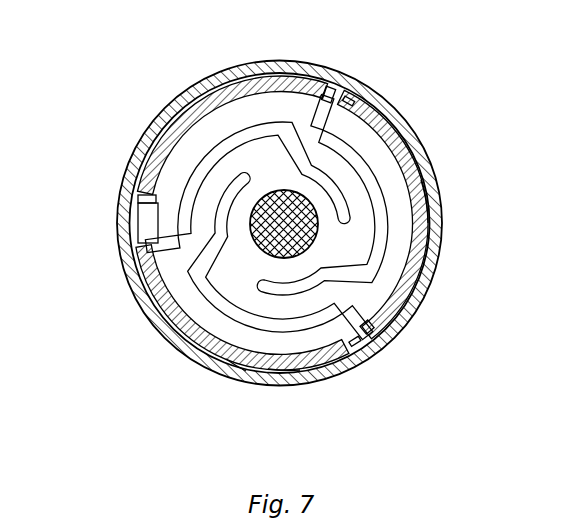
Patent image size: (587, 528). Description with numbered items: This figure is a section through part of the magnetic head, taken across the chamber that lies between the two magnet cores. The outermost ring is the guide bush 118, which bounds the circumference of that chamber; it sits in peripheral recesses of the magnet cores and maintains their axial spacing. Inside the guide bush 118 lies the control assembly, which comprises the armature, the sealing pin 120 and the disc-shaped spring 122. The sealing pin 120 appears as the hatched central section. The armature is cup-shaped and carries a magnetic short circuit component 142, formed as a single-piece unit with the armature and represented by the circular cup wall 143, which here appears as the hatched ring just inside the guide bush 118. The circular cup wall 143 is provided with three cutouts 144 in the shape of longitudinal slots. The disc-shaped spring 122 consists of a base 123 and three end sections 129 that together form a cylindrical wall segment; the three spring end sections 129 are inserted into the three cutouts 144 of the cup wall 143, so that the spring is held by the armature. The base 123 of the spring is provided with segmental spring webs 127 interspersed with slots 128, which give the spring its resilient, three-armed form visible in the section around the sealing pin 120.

The guide bush 118 is at (442, 224).
The sealing pin 120 is at (306, 193).
The disc-shaped spring 122 is at (249, 274).
The base 123 is at (292, 372).
The segmental spring webs 127 is at (248, 152).
The slots 128 is at (176, 134).
The spring end sections 129 is at (150, 218).
The magnetic short circuit component 142 is at (241, 362).
The circular cup wall 143 is at (424, 251).
The cutouts 144 is at (148, 203).